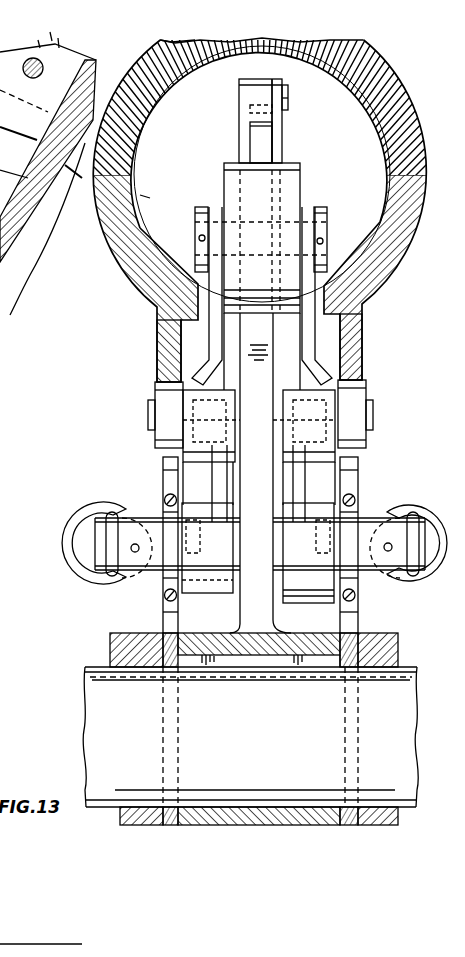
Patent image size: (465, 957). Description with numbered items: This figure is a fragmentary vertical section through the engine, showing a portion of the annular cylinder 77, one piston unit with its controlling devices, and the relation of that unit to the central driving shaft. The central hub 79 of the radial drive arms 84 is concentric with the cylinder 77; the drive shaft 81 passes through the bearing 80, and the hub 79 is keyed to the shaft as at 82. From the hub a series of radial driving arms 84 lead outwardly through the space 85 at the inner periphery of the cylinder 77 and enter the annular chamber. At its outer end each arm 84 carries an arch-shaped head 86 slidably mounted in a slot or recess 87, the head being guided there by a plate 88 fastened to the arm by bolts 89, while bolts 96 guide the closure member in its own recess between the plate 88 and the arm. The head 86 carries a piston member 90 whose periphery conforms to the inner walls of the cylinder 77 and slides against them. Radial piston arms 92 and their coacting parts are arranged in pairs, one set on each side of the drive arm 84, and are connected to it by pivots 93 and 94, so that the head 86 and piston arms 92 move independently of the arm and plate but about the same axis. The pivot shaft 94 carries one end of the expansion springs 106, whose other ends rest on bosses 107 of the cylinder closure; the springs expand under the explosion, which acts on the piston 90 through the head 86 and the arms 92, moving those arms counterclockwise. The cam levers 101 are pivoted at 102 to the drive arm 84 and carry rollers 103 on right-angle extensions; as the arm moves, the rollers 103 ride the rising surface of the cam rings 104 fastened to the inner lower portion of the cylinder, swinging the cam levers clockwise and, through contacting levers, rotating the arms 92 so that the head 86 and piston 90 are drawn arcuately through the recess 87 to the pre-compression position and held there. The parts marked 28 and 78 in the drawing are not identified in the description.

The adjacent member 28 is at (48, 173).
The cylinder 77 is at (407, 100).
The ring wall 78 is at (144, 76).
The central hub 79 is at (318, 646).
The bearing 80 is at (118, 652).
The drive shaft 81 is at (96, 718).
The key 82 is at (200, 642).
The radial driving arm 84 is at (238, 87).
The space 85 is at (198, 286).
The arch-shaped head 86 is at (266, 148).
The recess 87 is at (251, 139).
The plate 88 is at (284, 134).
The bolts 89 is at (288, 99).
The piston member 90 is at (150, 198).
The radial piston arms 92 is at (162, 470).
The pivot 93 is at (328, 232).
The pivot shaft 94 is at (364, 520).
The bolts 96 is at (312, 338).
The cam levers 101 is at (212, 500).
The pivot 102 is at (150, 422).
The rollers 103 is at (160, 406).
The cam rings 104 is at (156, 346).
The expansion springs 106 is at (88, 522).
The bosses 107 is at (124, 514).